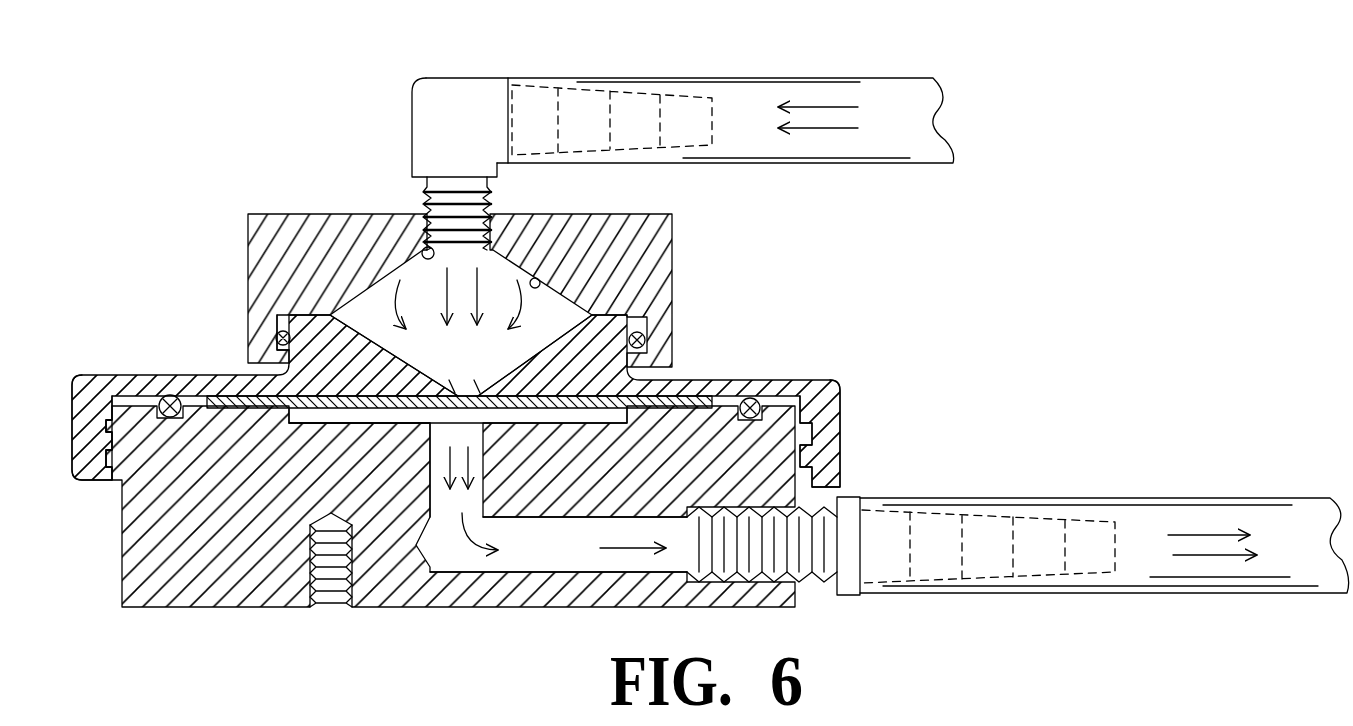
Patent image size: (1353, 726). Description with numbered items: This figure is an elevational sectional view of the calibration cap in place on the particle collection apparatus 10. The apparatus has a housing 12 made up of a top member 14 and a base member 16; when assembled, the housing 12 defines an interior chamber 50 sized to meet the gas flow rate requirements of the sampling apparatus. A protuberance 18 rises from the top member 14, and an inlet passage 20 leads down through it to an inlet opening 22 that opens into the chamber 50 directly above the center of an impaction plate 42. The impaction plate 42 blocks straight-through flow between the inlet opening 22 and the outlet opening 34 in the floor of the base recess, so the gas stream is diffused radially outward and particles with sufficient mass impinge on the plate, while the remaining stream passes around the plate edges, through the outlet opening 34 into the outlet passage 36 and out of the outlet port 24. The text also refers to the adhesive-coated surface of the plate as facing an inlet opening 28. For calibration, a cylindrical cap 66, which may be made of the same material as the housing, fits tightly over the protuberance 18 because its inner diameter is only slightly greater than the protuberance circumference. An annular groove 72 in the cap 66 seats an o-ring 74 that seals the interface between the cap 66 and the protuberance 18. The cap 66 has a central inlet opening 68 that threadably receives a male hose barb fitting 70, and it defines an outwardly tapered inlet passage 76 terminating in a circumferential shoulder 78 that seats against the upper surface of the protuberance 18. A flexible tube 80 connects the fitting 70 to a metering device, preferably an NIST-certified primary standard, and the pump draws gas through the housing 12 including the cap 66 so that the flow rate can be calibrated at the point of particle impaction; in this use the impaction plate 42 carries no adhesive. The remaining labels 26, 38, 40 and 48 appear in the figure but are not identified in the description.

The particle collection apparatus 10 is at (866, 377).
The housing 12 is at (106, 554).
The top member 14 is at (112, 375).
The base member 16 is at (240, 597).
The protuberance 18 is at (645, 373).
The inlet passage 20 is at (543, 348).
The inlet opening 22 is at (460, 392).
The outlet port 24 is at (795, 507).
The outlet flow cone 26 is at (992, 520).
The inlet opening 28 is at (1162, 498).
The outlet opening 34 is at (436, 432).
The outlet passage 36 is at (560, 574).
The O-ring seal 38 is at (748, 396).
The O-ring seal 40 is at (170, 394).
The impaction plate 42 is at (230, 397).
The threaded nut portion 48 is at (842, 430).
The interior chamber 50 is at (591, 420).
The cylindrical cap 66 is at (685, 247).
The central inlet opening 68 is at (412, 250).
The male hose barb fitting 70 is at (637, 95).
The annular groove 72 is at (668, 330).
The o-ring 74 is at (278, 340).
The outwardly tapered inlet passage 76 is at (538, 280).
The circumferential shoulder 78 is at (287, 333).
The flexible tube 80 is at (885, 78).